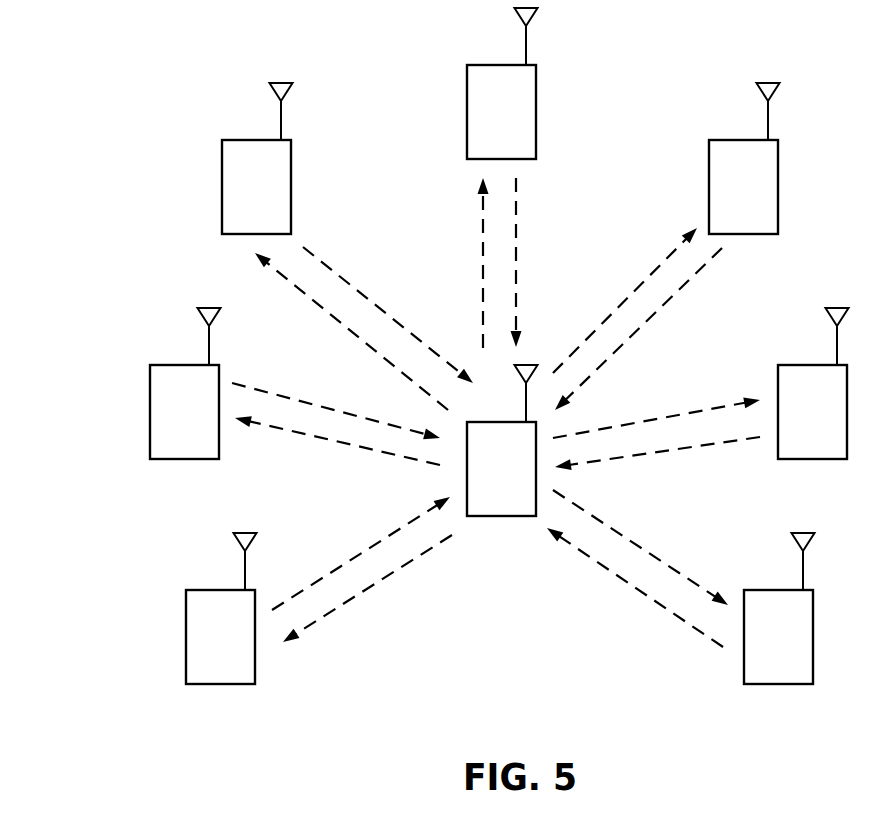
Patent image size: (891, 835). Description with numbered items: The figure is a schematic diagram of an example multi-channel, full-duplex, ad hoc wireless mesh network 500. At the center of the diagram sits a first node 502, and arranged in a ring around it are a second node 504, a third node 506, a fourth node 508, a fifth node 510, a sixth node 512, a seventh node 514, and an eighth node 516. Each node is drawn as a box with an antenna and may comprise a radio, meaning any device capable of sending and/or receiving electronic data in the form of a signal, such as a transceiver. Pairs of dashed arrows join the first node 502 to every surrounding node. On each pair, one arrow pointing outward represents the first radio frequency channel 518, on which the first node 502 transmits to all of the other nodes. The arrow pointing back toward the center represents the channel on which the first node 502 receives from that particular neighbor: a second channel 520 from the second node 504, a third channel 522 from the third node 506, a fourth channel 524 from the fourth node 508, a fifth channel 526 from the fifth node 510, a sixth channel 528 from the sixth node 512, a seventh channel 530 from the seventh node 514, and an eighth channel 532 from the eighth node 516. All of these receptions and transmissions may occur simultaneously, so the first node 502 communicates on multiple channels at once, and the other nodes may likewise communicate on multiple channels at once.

The wireless mesh network 500 is at (66, 74).
The first node 502 is at (482, 479).
The second node 504 is at (201, 647).
The third node 506 is at (759, 647).
The fourth node 508 is at (724, 197).
The fifth node 510 is at (237, 197).
The sixth node 512 is at (165, 422).
The seventh node 514 is at (793, 422).
The eighth node 516 is at (482, 122).
The first radio frequency channel 518 is at (497, 412).
The second channel 520 is at (361, 553).
The third channel 522 is at (635, 587).
The fourth channel 524 is at (638, 329).
The fifth channel 526 is at (388, 315).
The sixth channel 528 is at (336, 411).
The seventh channel 530 is at (657, 455).
The eighth channel 532 is at (536, 262).